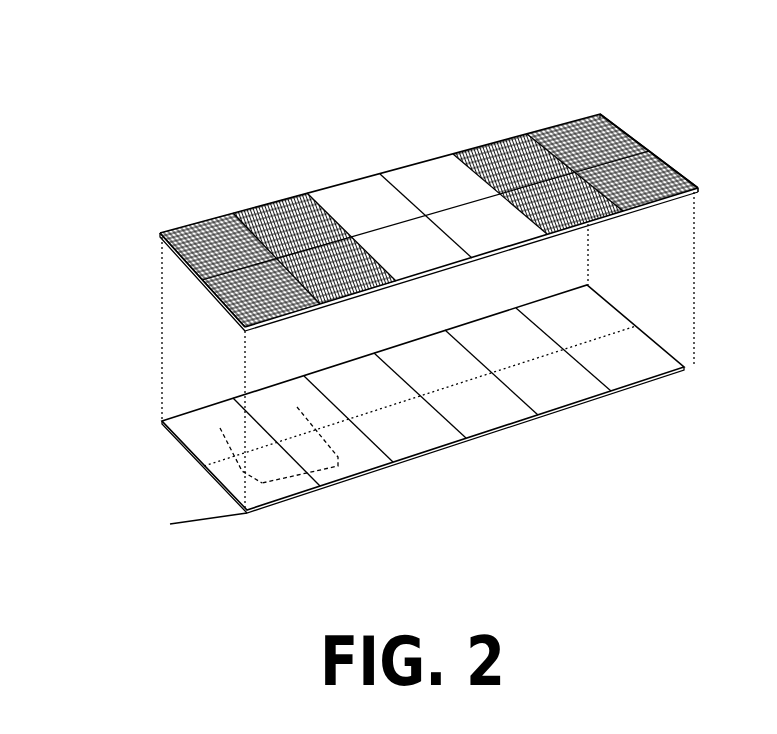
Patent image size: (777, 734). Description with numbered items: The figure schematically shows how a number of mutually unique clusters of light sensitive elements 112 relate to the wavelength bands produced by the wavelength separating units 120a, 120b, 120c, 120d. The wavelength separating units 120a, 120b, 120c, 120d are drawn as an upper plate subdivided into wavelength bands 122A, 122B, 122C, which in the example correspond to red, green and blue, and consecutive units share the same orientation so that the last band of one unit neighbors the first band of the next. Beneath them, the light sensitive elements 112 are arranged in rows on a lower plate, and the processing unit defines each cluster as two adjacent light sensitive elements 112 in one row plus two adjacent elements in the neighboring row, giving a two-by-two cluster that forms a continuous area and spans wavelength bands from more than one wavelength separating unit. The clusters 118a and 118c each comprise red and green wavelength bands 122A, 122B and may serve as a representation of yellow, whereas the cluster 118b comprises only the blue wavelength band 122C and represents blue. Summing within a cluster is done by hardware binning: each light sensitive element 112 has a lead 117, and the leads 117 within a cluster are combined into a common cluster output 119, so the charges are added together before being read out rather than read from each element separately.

The light sensitive elements 112 is at (287, 492).
The lead 117 is at (220, 432).
The cluster 118a is at (210, 218).
The cluster 118b is at (353, 205).
The cluster 118c is at (515, 137).
The common cluster output 119 is at (207, 516).
The wavelength separating unit 120a is at (168, 267).
The wavelength separating unit 120b is at (636, 122).
The wavelength separating unit 120c is at (208, 313).
The wavelength separating unit 120d is at (686, 156).
The wavelength band 122A is at (173, 231).
The wavelength band 122B is at (282, 203).
The wavelength band 122C is at (343, 178).